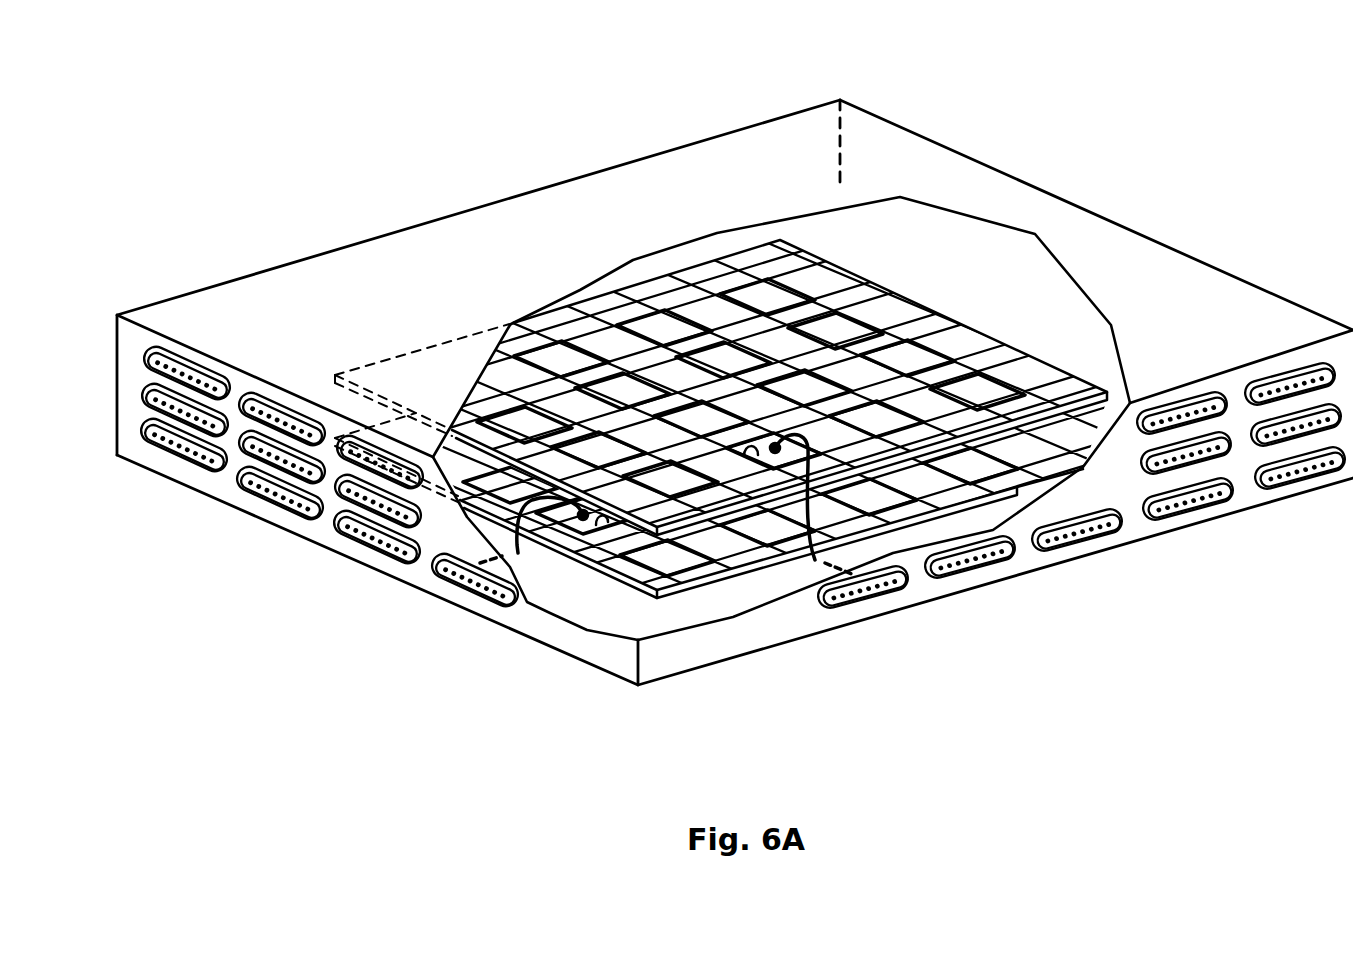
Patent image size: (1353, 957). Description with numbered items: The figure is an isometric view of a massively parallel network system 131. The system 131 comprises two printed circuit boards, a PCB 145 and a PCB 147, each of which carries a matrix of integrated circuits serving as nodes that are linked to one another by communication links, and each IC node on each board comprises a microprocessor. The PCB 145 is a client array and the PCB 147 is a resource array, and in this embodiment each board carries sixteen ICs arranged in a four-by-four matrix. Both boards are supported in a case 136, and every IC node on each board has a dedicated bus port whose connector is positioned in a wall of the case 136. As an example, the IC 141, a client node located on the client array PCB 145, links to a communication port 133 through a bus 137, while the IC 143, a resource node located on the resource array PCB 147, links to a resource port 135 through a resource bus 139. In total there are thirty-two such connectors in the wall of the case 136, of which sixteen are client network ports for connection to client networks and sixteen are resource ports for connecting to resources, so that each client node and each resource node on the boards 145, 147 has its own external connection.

The system 131 is at (676, 485).
The communication port 133 is at (873, 594).
The resource port 135 is at (452, 570).
The case 136 is at (524, 180).
The bus 137 is at (813, 560).
The resource bus 139 is at (513, 550).
The IC 141 is at (750, 445).
The IC 143 is at (609, 518).
The PCB 145 is at (860, 300).
The PCB 147 is at (583, 565).